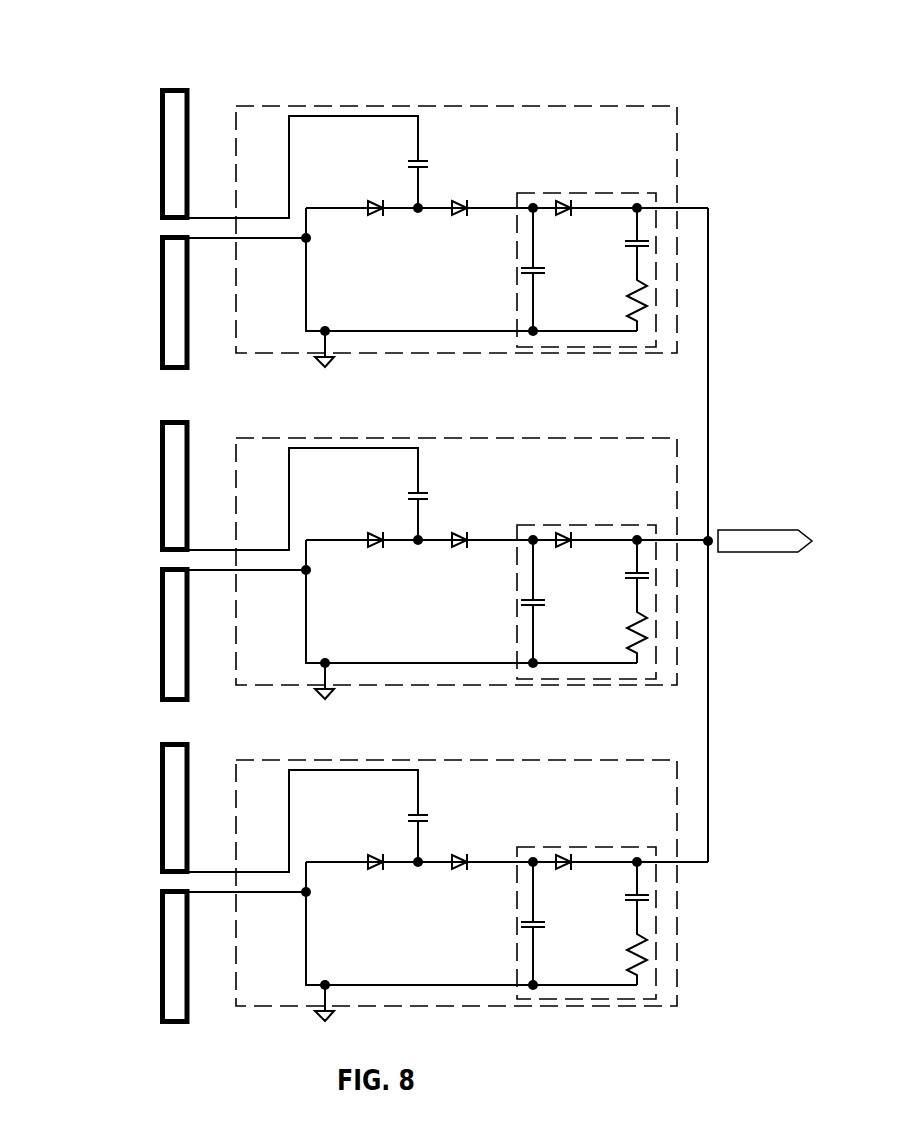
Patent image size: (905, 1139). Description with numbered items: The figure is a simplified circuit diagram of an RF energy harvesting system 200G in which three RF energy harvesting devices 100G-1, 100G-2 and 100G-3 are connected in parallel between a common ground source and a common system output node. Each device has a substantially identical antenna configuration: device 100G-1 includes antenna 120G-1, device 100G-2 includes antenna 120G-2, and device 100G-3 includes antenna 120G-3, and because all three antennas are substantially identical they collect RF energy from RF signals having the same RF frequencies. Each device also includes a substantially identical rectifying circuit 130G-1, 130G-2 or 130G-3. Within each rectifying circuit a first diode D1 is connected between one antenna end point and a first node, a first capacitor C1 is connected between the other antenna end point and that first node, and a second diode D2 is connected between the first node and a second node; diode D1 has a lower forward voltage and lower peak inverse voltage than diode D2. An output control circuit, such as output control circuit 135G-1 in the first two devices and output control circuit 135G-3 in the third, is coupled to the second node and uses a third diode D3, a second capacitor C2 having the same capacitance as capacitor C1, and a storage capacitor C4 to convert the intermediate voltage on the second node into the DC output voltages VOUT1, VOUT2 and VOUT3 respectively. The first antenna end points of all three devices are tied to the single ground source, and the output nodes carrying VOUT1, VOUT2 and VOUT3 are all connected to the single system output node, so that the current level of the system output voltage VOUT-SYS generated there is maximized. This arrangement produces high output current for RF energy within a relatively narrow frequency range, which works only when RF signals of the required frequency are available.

The RF energy harvesting system 200G is at (133, 53).
The RF energy harvesting device 100G-1 is at (370, 97).
The RF energy harvesting device 100G-2 is at (392, 427).
The RF energy harvesting device 100G-3 is at (378, 753).
The antenna 120G-1 is at (189, 116).
The antenna 120G-2 is at (189, 456).
The antenna 120G-3 is at (189, 778).
The rectifying circuit 130G-1 is at (600, 139).
The rectifying circuit 130G-2 is at (540, 462).
The rectifying circuit 130G-3 is at (625, 787).
The output control circuit 135G-1 is at (583, 193).
The output control circuit 135G-3 is at (583, 847).
The first capacitor C1 is at (412, 161).
The second capacitor C2 is at (540, 270).
The storage capacitor C4 is at (633, 249).
The first diode D1 is at (377, 201).
The second diode D2 is at (459, 215).
The third diode D3 is at (563, 215).
The DC output voltage VOUT1 is at (666, 208).
The DC output voltage VOUT2 is at (666, 540).
The DC output voltage VOUT3 is at (667, 862).
The system output voltage VOUT-SYS is at (765, 542).